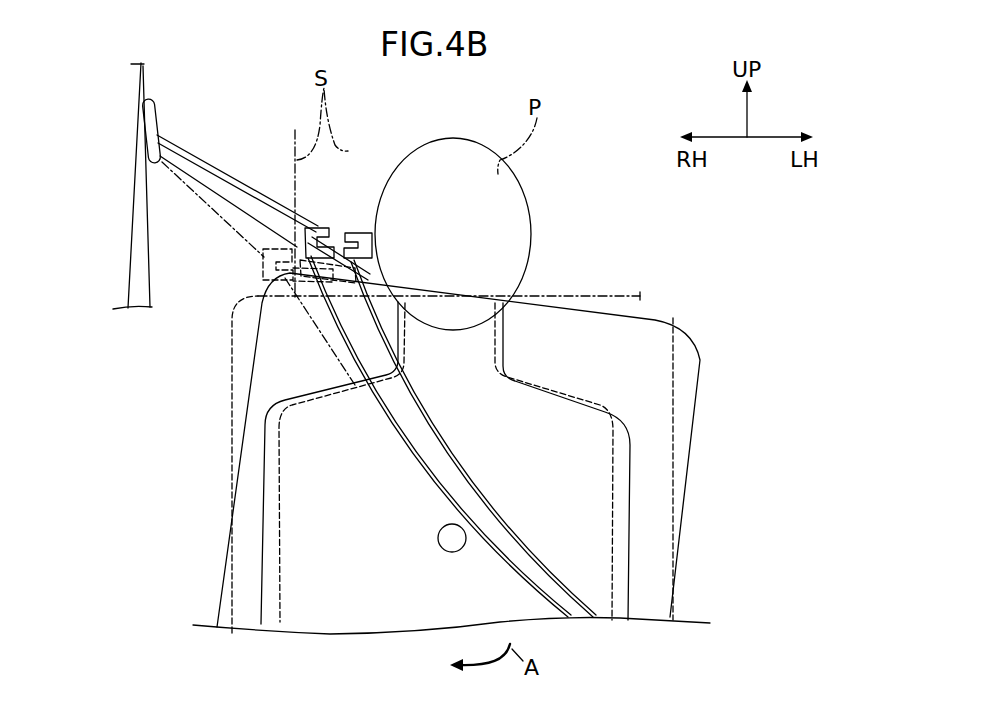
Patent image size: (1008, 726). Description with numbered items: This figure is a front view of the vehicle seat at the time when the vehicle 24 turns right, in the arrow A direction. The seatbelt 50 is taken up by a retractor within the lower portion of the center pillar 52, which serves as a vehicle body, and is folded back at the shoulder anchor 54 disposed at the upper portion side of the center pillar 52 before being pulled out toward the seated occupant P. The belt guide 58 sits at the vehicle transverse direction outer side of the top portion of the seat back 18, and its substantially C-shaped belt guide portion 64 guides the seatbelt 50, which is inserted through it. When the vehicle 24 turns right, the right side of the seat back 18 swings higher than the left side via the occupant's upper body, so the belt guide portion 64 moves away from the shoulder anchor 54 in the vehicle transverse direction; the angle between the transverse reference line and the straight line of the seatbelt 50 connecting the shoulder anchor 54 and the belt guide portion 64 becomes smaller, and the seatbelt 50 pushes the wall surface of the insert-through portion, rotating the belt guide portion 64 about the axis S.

The seat back 18 is at (683, 334).
The vehicle 24 is at (156, 601).
The seatbelt 50 is at (228, 207).
The center pillar 52 is at (142, 70).
The shoulder anchor 54 is at (159, 114).
The belt guide 58 is at (265, 231).
The belt guide portion 64 is at (337, 230).